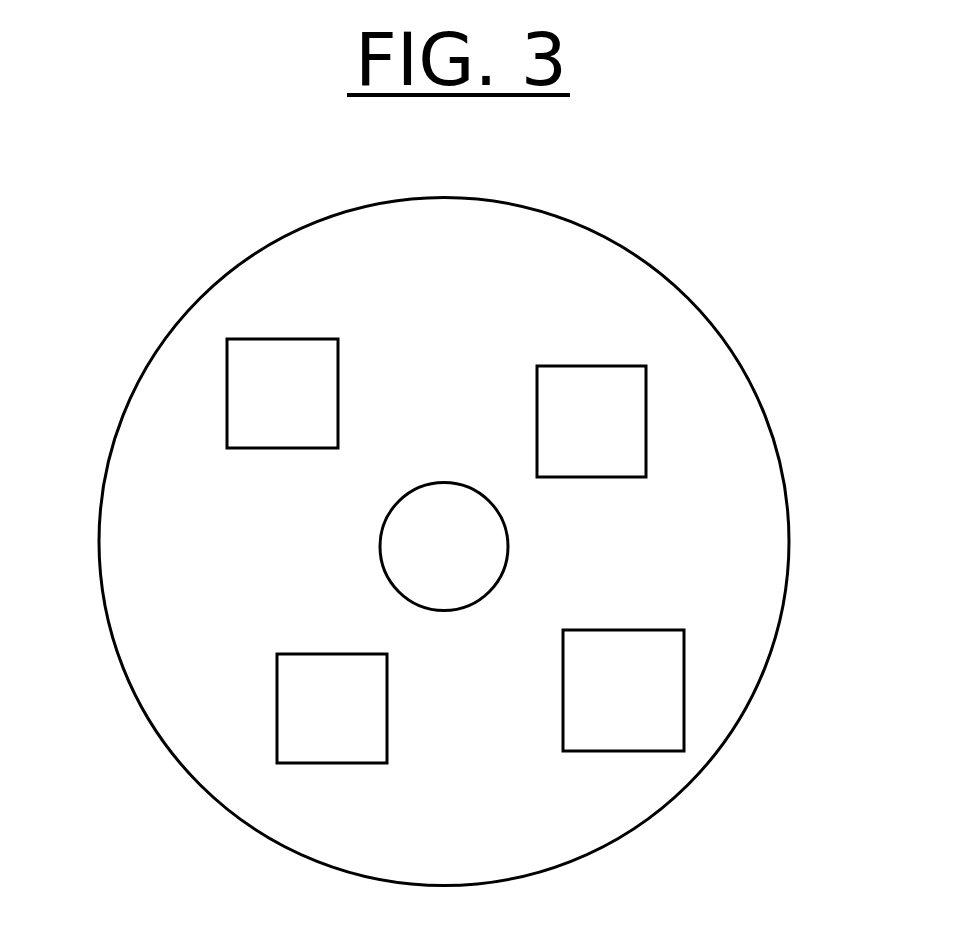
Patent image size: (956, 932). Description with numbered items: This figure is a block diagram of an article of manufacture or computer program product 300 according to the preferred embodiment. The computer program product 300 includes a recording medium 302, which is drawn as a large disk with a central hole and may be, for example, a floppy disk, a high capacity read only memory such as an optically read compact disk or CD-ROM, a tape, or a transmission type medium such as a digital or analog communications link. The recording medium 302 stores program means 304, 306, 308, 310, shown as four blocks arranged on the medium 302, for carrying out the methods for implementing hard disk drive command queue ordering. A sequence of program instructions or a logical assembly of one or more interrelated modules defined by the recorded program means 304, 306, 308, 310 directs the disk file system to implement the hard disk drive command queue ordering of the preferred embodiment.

The computer program product 300 is at (745, 310).
The recording medium 302 is at (150, 335).
The program means 304 is at (332, 708).
The program means 306 is at (623, 690).
The program means 308 is at (591, 421).
The program means 310 is at (282, 393).